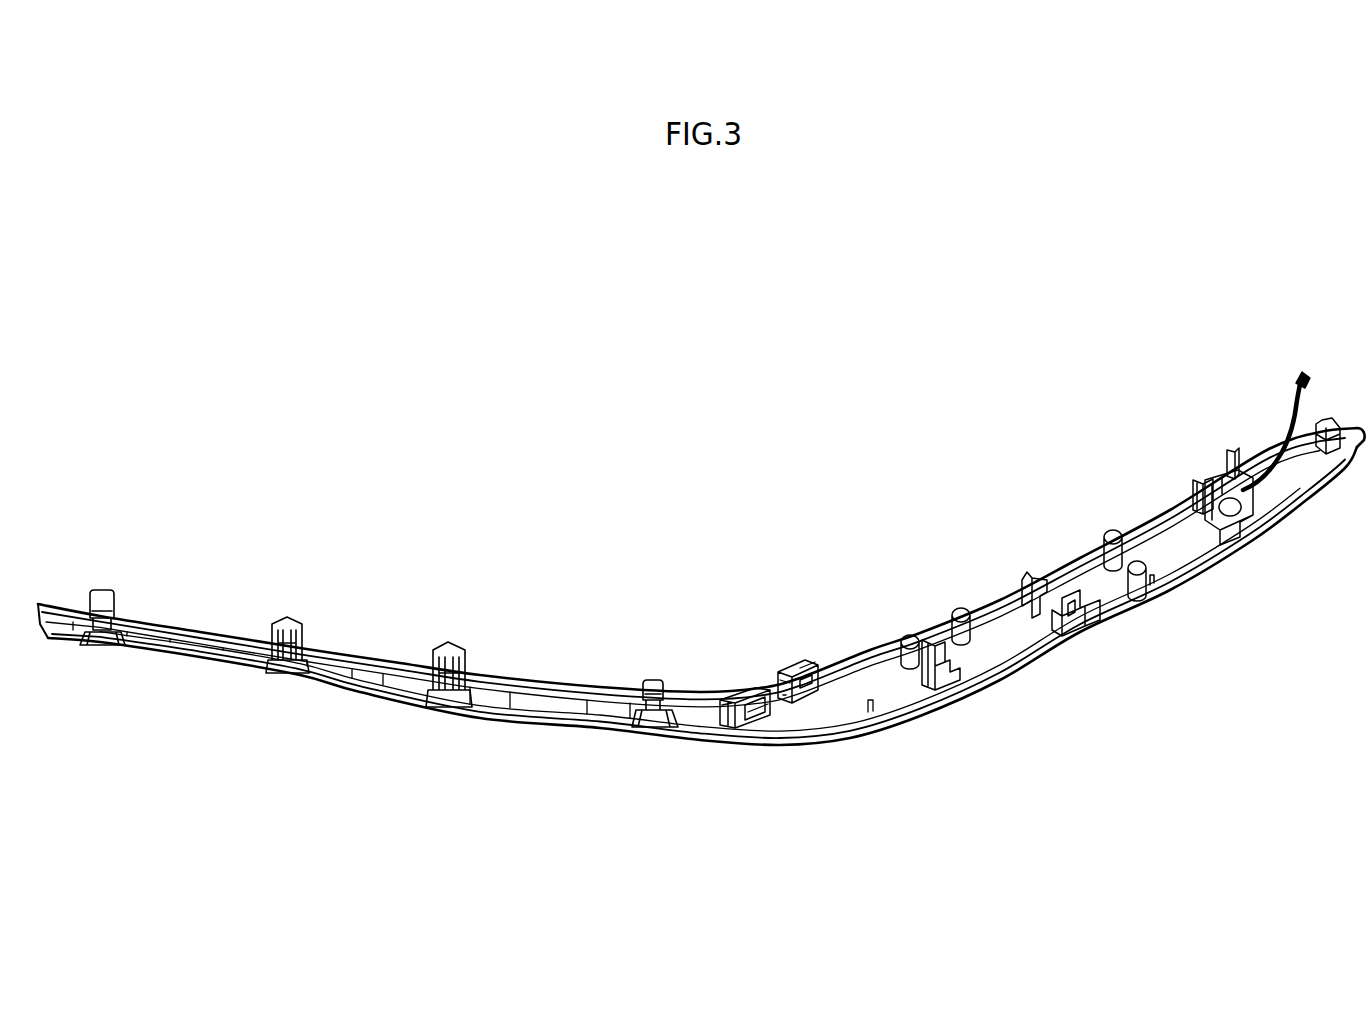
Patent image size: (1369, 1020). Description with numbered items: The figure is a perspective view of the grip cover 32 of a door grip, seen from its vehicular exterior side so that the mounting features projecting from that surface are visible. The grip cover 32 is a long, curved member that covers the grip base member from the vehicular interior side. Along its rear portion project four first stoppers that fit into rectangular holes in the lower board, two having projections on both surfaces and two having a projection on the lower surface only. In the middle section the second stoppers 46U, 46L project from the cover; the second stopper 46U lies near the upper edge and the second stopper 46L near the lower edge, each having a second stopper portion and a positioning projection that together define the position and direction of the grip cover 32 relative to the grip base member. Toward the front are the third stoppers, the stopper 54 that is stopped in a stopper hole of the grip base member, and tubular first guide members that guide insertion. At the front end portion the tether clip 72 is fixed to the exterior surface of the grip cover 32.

The grip cover 32 is at (1012, 698).
The second stopper 46U is at (768, 612).
The second stopper 46L is at (865, 612).
The stopper 54 is at (925, 636).
The tether clip 72 is at (1283, 386).